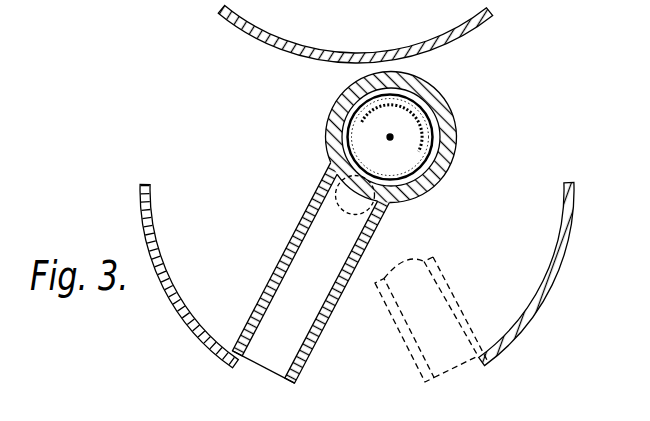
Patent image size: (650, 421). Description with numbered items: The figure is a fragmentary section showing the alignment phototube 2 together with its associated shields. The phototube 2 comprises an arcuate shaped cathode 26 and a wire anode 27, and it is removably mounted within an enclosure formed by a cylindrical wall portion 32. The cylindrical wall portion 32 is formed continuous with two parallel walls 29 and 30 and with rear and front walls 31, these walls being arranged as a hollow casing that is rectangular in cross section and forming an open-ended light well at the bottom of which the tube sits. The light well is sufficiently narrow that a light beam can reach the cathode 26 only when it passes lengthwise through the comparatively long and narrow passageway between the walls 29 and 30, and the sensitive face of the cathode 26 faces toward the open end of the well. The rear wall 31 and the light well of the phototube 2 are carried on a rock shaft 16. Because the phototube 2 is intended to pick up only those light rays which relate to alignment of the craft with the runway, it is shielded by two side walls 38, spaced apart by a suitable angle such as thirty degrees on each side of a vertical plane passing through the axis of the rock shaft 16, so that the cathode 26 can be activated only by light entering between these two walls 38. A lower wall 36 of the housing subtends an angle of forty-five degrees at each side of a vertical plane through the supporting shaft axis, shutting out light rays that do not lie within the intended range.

The phototube 2 is at (430, 164).
The shaft 16 is at (330, 183).
The cathode 26 is at (417, 136).
The wire anode 27 is at (388, 136).
The wall 29 is at (283, 244).
The wall 30 is at (322, 322).
The rear and front walls 31 is at (284, 300).
The cylindrical wall portion 32 is at (447, 113).
The lower wall 36 is at (347, 54).
The side walls 38 is at (175, 308).